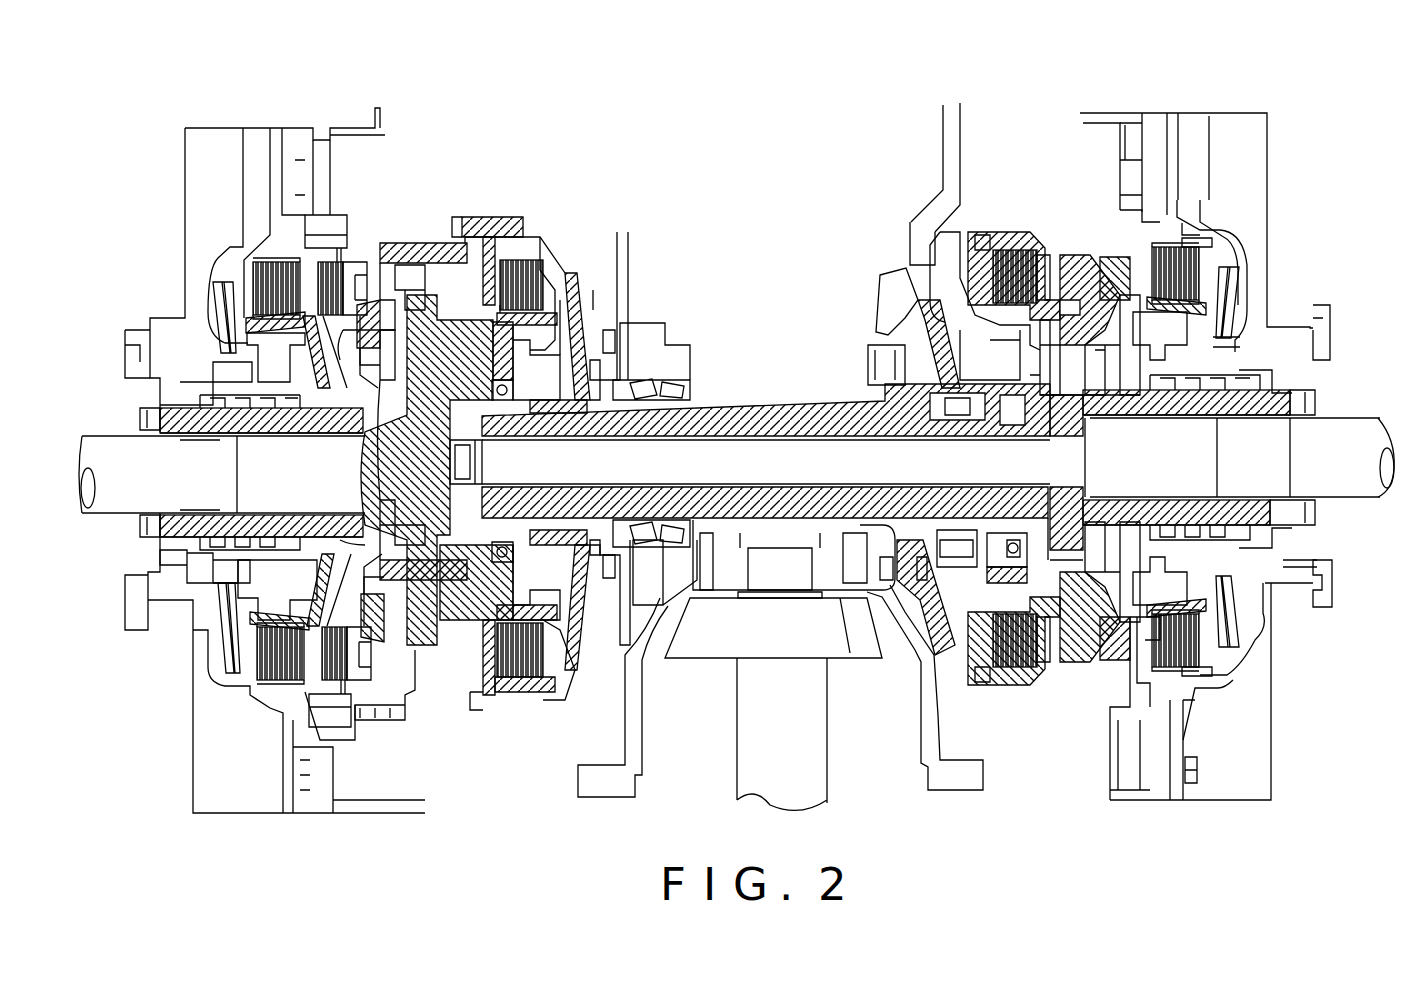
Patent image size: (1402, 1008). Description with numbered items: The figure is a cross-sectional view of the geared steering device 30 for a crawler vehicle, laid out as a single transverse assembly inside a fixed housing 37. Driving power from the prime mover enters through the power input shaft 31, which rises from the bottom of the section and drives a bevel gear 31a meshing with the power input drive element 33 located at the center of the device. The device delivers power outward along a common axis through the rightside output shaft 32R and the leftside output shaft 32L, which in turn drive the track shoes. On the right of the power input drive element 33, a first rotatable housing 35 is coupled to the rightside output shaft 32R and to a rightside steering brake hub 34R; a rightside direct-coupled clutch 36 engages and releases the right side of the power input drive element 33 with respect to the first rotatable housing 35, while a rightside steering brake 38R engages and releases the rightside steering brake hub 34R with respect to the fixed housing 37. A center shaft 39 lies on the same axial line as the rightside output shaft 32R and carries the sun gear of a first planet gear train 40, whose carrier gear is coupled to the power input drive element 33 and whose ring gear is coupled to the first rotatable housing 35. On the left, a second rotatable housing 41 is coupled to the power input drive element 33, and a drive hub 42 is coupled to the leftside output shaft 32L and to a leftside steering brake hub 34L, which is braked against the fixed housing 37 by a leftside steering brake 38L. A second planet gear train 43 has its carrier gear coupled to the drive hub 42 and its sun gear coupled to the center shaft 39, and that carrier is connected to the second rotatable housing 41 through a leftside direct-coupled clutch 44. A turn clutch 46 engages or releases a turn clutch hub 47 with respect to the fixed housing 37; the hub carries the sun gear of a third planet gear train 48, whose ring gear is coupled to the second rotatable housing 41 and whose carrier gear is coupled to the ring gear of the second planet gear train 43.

The geared steering device 30 is at (792, 116).
The power input shaft 31 is at (816, 742).
The bevel gear 31a is at (665, 655).
The leftside output shaft 32L is at (116, 492).
The rightside output shaft 32R is at (1345, 472).
The power input drive element 33 is at (886, 392).
The leftside steering brake hub 34L is at (300, 325).
The rightside steering brake hub 34R is at (1200, 327).
The first rotatable housing 35 is at (1048, 245).
The rightside direct-coupled clutch 36 is at (1012, 226).
The fixed housing 37 is at (314, 126).
The leftside steering brake 38L is at (254, 278).
The rightside steering brake 38R is at (1130, 266).
The center shaft 39 is at (716, 452).
The first planet gear train 40 is at (1088, 650).
The second rotatable housing 41 is at (530, 690).
The drive hub 42 is at (618, 357).
The second planet gear train 43 is at (468, 708).
The leftside direct-coupled clutch 44 is at (537, 262).
The turn clutch 46 is at (337, 265).
The turn clutch hub 47 is at (395, 255).
The third planet gear train 48 is at (405, 705).